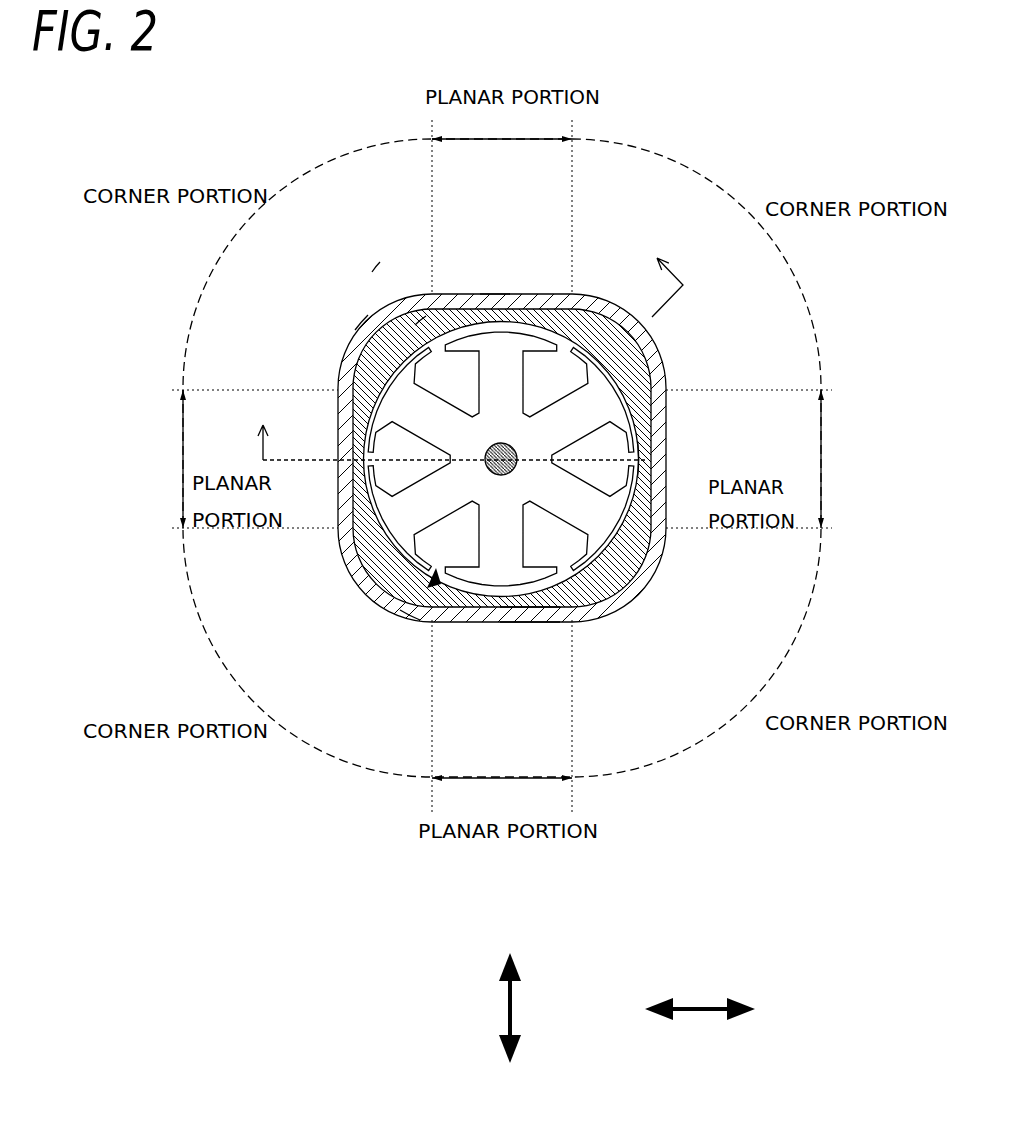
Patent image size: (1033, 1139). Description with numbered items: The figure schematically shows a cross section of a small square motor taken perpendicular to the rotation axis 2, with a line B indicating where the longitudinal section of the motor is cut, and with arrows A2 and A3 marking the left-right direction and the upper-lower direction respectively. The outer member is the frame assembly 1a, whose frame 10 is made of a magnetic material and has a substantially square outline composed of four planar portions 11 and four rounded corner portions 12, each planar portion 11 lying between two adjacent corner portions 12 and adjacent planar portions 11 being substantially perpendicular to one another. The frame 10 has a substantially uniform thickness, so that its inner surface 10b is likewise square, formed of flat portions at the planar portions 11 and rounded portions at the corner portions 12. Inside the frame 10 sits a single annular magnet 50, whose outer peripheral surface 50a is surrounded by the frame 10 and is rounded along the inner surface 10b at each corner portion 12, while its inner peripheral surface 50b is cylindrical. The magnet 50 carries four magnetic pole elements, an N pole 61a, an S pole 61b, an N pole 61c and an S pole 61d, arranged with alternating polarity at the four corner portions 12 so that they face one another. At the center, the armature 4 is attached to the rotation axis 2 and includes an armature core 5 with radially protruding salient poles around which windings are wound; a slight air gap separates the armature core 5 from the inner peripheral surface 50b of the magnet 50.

The frame assembly 1a is at (373, 265).
The rotation axis 2 is at (514, 447).
The armature 4 is at (417, 620).
The armature core 5 is at (422, 330).
The frame 10 is at (558, 278).
The inner surface of the frame 10b is at (650, 457).
The planar portion 11 is at (494, 300).
The corner portion 12 is at (368, 337).
The magnet 50 is at (604, 312).
The outer peripheral surface of the magnet 50a is at (542, 622).
The inner peripheral surface of the magnet 50b is at (537, 610).
The N pole 61a is at (640, 341).
The S pole 61b is at (605, 603).
The N pole 61c is at (388, 605).
The S pole 61d is at (380, 317).
The arrow indicating the left-right direction A2 is at (715, 1006).
The arrow indicating the upper-lower direction A3 is at (508, 1003).
The line B- B is at (466, 351).